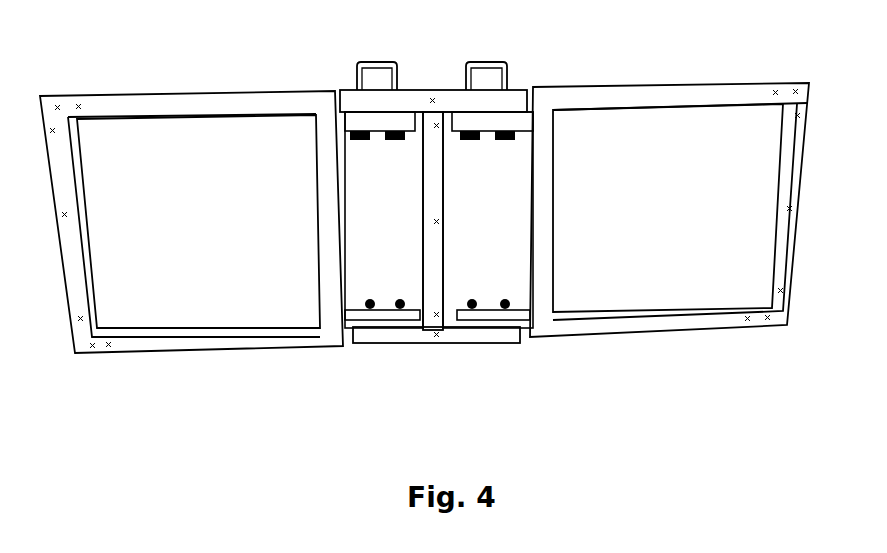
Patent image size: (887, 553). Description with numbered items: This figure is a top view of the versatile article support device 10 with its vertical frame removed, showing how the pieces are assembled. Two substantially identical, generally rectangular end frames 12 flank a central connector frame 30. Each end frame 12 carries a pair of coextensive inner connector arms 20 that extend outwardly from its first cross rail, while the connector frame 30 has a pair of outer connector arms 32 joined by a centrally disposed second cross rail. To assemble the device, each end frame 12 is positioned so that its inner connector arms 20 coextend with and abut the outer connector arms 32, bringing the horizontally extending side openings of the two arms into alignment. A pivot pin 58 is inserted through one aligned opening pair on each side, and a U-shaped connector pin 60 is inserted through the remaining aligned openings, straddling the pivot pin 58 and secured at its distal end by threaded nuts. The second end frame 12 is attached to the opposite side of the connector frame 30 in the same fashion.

The versatile article support device 10 is at (424, 243).
The end frame 12 is at (213, 352).
The inner connector arm 20 is at (382, 220).
The connector frame 30 is at (409, 221).
The outer connector arm 32 is at (430, 215).
The pivot pin 58 is at (487, 139).
The connector pin 60 is at (357, 74).